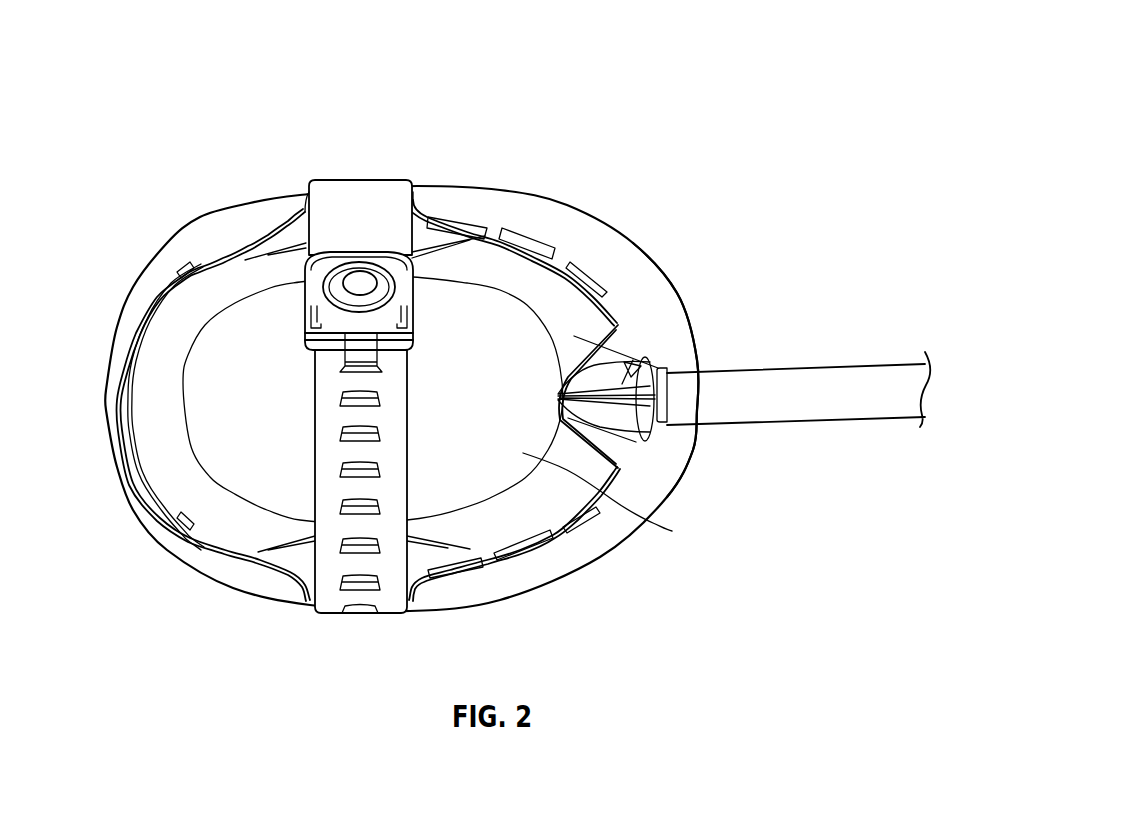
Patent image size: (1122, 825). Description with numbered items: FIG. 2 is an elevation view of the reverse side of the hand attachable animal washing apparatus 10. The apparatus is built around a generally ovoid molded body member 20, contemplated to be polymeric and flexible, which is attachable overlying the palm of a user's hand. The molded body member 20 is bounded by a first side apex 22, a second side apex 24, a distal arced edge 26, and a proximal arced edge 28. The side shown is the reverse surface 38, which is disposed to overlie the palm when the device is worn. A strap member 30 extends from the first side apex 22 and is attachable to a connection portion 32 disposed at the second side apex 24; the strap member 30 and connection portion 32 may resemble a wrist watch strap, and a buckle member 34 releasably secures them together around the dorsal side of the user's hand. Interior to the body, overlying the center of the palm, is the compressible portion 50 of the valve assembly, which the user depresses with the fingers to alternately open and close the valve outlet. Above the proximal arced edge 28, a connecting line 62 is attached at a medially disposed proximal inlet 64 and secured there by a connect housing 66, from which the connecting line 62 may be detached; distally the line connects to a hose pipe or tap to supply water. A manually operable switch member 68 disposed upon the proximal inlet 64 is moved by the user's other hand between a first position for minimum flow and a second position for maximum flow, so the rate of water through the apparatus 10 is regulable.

The hand attachable animal washing apparatus 10 is at (501, 384).
The molded body member 20 is at (418, 378).
The first side apex 22 is at (354, 384).
The second side apex 24 is at (331, 245).
The distal arced edge 26 is at (125, 497).
The proximal arced edge 28 is at (697, 348).
The strap member 30 is at (400, 500).
The connection portion 32 is at (330, 203).
The buckle member 34 is at (318, 338).
The reverse surface 38 is at (645, 517).
The compressible portion 50 is at (127, 440).
The connecting line 62 is at (843, 367).
The proximal inlet 64 is at (740, 363).
The connect housing 66 is at (644, 390).
The manually operable switch member 68 is at (630, 380).